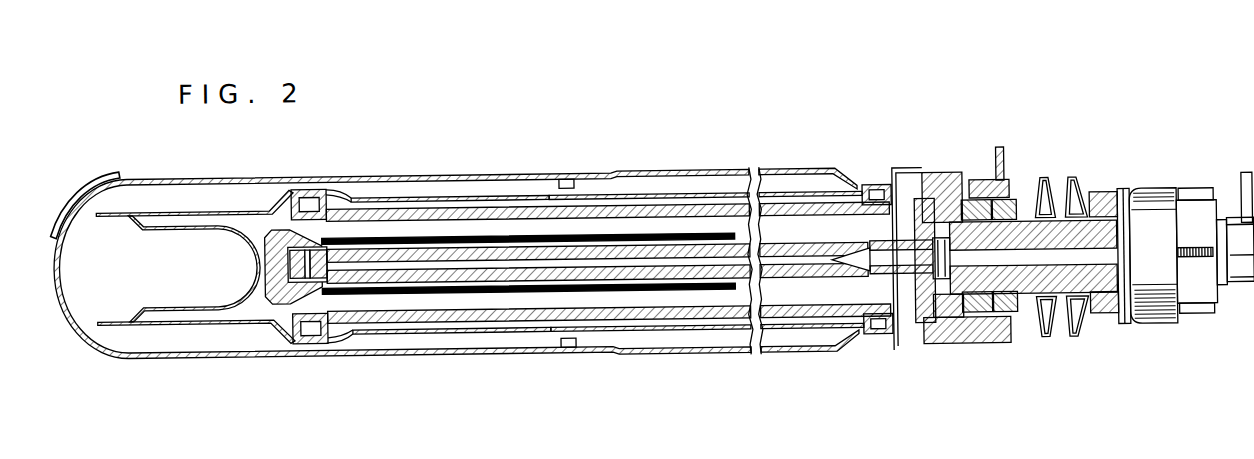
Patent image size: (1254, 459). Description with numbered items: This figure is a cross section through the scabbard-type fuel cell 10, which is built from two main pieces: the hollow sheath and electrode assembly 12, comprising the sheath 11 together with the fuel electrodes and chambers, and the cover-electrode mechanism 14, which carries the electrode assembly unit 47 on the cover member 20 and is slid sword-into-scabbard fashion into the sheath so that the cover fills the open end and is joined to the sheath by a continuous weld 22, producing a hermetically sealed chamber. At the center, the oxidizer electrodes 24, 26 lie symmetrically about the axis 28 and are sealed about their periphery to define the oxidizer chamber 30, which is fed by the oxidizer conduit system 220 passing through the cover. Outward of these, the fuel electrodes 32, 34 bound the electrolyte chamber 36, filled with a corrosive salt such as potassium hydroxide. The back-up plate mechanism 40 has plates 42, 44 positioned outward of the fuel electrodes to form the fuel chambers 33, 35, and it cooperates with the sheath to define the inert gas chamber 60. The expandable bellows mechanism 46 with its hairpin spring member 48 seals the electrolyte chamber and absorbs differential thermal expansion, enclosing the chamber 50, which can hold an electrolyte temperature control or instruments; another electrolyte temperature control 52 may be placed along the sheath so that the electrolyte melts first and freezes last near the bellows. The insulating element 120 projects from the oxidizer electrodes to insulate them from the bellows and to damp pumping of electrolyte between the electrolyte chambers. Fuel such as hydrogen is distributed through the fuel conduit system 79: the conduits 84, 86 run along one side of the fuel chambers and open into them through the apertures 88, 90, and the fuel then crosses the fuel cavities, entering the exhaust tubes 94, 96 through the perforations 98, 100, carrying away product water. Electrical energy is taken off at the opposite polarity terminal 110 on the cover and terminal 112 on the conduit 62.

The scabbard-type fuel cell 10 is at (918, 105).
The sheath 11 is at (648, 172).
The hollow sheath and electrode assembly 12 is at (628, 169).
The cover-electrode mechanism 14 is at (990, 347).
The cover member 20 is at (1013, 181).
The continuous weld 22 is at (928, 173).
The oxidizer electrode 24 is at (710, 233).
The oxidizer electrode 26 is at (600, 272).
The axis 28 is at (745, 257).
The oxidizer chamber 30 is at (777, 258).
The fuel electrode 32 is at (567, 176).
The fuel chamber 33 is at (522, 204).
The fuel electrode 34 is at (502, 312).
The fuel chamber 35 is at (403, 319).
The electrolyte chamber 36 is at (670, 221).
The back-up plate mechanism 40 is at (442, 190).
The plate 42 is at (483, 194).
The plate 44 is at (458, 329).
The expandable bellows mechanism 46 is at (152, 208).
The electrode assembly unit 47 is at (723, 257).
The hairpin spring member 48 is at (200, 222).
The chamber 50 is at (187, 270).
The electrolyte temperature control 52 is at (94, 164).
The inert gas chamber 60 is at (407, 173).
The conduit 62 is at (1103, 225).
The fuel conduit system 79 is at (297, 342).
The conduit 84 is at (880, 187).
The conduit 86 is at (883, 326).
The aperture 88 is at (857, 188).
The aperture 90 is at (837, 354).
The exhaust tube 94 is at (313, 193).
The exhaust tube 96 is at (318, 332).
The perforation 98 is at (345, 189).
The perforation 100 is at (340, 329).
The terminal 110 is at (1001, 151).
The terminal 112 is at (1242, 184).
The insulating element 120 is at (270, 294).
The oxidizer conduit system 220 is at (1083, 232).